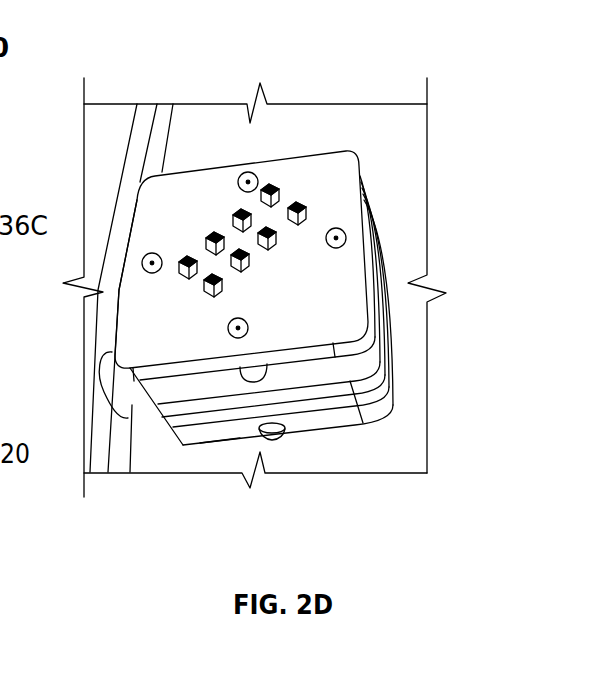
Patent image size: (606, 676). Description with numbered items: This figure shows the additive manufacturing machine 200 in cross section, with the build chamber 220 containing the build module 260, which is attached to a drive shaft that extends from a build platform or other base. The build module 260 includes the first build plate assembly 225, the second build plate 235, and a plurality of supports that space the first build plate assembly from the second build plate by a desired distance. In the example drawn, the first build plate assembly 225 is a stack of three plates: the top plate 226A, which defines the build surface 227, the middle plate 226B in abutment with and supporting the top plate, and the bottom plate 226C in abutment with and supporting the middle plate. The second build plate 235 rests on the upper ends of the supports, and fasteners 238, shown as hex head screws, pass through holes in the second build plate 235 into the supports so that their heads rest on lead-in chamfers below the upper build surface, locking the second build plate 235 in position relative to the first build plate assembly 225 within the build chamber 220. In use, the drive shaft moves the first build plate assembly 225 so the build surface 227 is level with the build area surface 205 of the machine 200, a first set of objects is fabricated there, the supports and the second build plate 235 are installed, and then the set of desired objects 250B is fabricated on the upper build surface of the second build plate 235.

The additive manufacturing machine 200 is at (378, 68).
The build area surface 205 is at (395, 437).
The build chamber 220 is at (393, 287).
The first build plate assembly 225 is at (402, 400).
The top plate 226A is at (340, 400).
The middle plate 226B is at (282, 435).
The bottom plate 226C is at (226, 452).
The build surface 227 is at (185, 383).
The second build plate 235 is at (373, 165).
The fasteners 238 is at (346, 236).
The set of desired objects 250B is at (233, 198).
The build module 260 is at (168, 452).